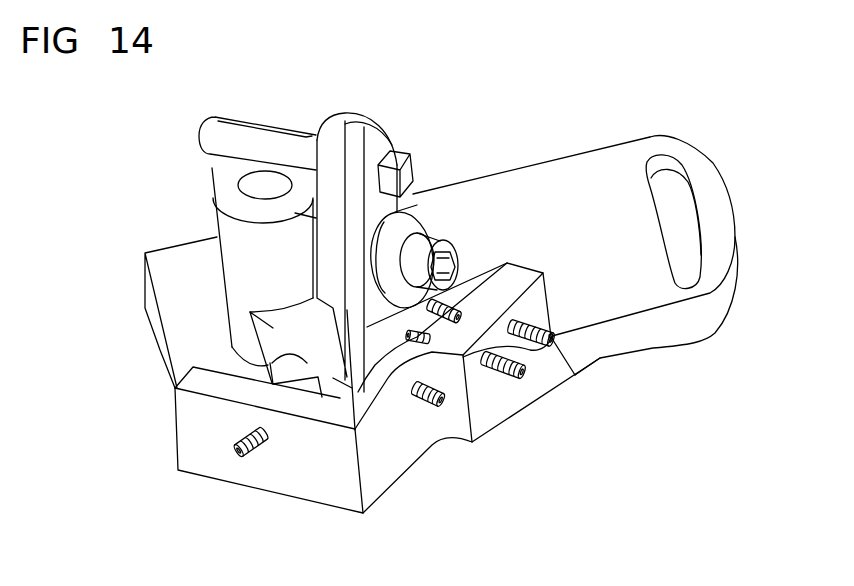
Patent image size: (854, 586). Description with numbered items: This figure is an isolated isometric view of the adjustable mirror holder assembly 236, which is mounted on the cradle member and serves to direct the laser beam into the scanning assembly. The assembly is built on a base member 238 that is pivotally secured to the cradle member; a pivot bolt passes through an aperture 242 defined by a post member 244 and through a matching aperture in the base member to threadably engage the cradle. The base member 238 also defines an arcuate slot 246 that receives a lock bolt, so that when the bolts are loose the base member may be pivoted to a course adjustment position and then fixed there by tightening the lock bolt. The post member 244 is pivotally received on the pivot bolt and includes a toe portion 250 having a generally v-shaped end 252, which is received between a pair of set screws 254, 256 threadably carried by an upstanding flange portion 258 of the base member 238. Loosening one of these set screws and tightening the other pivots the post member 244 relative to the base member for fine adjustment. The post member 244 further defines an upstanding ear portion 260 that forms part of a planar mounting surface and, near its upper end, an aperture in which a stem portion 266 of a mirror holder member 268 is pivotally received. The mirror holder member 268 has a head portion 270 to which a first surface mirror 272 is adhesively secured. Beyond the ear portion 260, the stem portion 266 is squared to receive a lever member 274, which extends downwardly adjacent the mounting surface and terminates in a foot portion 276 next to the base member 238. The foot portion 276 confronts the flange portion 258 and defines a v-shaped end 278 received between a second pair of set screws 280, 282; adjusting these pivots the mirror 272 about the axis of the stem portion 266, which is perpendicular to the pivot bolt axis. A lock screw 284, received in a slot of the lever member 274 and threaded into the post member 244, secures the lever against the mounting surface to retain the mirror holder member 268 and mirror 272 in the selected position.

The adjustable mirror holder assembly 236 is at (543, 115).
The base member 238 is at (643, 342).
The aperture 242 is at (245, 184).
The post member 244 is at (233, 228).
The arcuate slot 246 is at (678, 168).
The toe portion 250 is at (273, 328).
The v-shaped end 252 is at (232, 348).
The set screw 254 is at (260, 457).
The set screw 256 is at (428, 404).
The upstanding flange portion 258 is at (173, 389).
The upstanding ear portion 260 is at (345, 124).
The stem portion 266 is at (415, 172).
The mirror holder member 268 is at (204, 155).
The head portion 270 is at (319, 135).
The first surface mirror 272 is at (239, 117).
The lever member 274 is at (415, 192).
The foot portion 276 is at (347, 430).
The v-shaped end 278 is at (550, 340).
The set screw 280 is at (553, 335).
The set screw 282 is at (508, 370).
The lock screw 284 is at (434, 240).